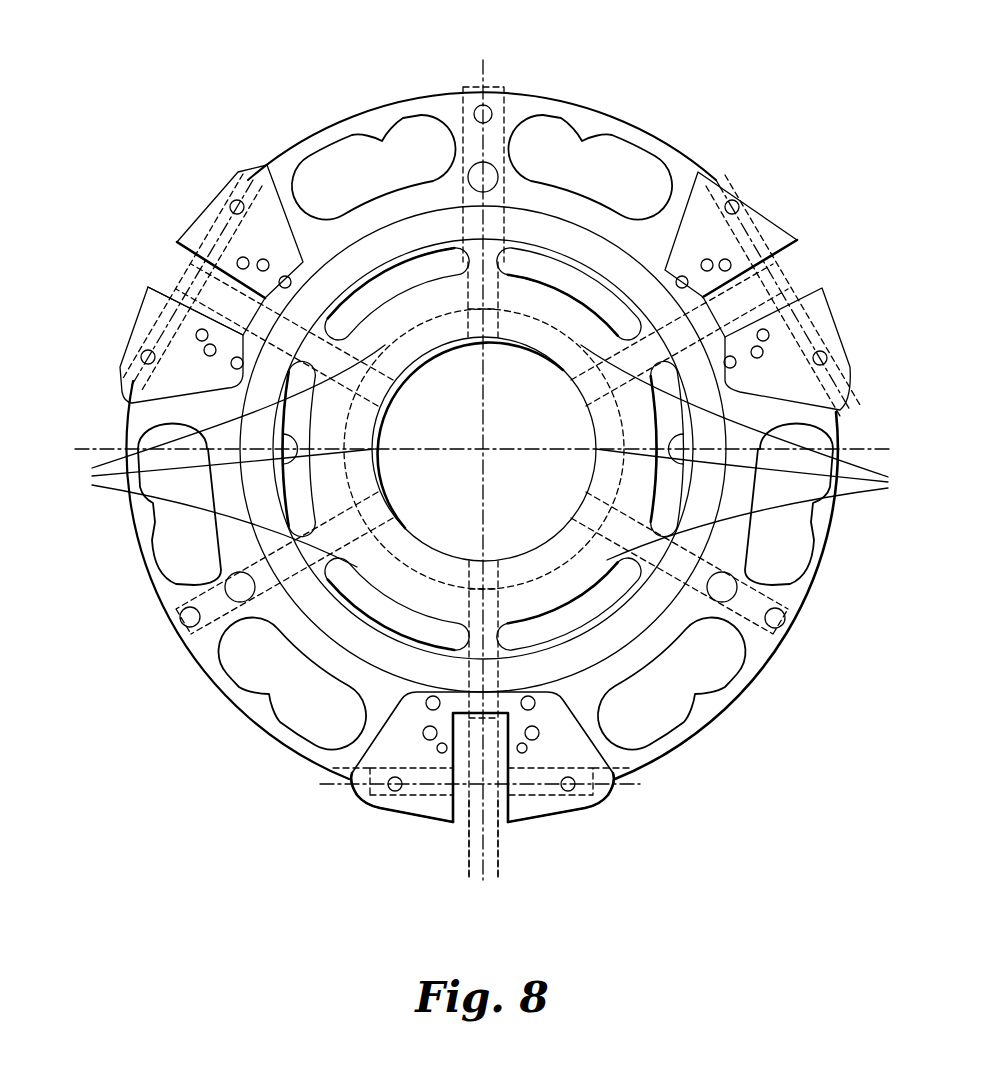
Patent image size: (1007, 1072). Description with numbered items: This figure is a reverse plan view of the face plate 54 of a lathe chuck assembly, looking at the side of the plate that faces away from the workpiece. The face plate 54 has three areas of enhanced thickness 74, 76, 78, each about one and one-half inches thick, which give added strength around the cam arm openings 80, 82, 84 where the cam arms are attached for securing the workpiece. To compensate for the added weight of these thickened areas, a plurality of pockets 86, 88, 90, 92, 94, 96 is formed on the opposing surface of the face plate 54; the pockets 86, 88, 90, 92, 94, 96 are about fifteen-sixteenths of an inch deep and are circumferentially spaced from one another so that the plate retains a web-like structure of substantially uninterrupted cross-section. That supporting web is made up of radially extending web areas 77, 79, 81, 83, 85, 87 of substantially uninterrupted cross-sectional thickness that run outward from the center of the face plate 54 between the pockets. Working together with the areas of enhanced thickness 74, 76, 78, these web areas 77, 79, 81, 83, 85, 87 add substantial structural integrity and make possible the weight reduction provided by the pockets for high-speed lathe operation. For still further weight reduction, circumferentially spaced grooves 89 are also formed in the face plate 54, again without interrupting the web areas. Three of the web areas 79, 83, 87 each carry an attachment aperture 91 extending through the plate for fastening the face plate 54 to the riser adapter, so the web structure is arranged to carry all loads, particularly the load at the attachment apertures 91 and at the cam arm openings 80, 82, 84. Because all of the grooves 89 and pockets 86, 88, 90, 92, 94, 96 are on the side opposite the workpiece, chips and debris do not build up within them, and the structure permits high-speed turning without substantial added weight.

The face plate 54 is at (800, 590).
The area of enhanced thickness 74 is at (413, 758).
The area of enhanced thickness 76 is at (182, 353).
The web area 77 is at (191, 264).
The area of enhanced thickness 78 is at (703, 220).
The web area 79 is at (484, 104).
The cam arm opening 80 is at (507, 803).
The web area 81 is at (772, 292).
The cam arm opening 82 is at (178, 248).
The web area 83 is at (780, 640).
The cam arm opening 84 is at (797, 262).
The web area 85 is at (478, 870).
The pocket 86 is at (640, 148).
The web area 87 is at (200, 655).
The pocket 88 is at (398, 110).
The grooves 89 is at (492, 456).
The pocket 90 is at (172, 575).
The attachment apertures 91 is at (497, 172).
The pocket 92 is at (240, 690).
The pocket 94 is at (760, 690).
The pocket 96 is at (825, 585).